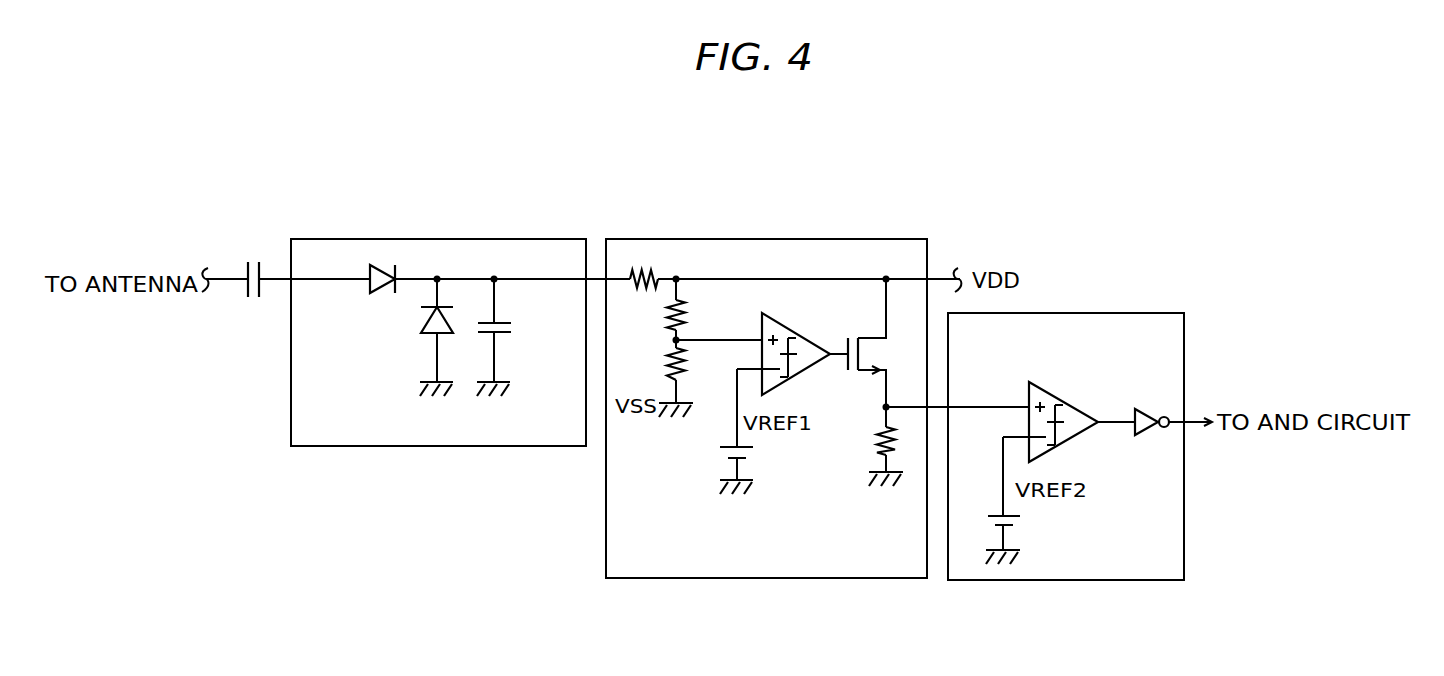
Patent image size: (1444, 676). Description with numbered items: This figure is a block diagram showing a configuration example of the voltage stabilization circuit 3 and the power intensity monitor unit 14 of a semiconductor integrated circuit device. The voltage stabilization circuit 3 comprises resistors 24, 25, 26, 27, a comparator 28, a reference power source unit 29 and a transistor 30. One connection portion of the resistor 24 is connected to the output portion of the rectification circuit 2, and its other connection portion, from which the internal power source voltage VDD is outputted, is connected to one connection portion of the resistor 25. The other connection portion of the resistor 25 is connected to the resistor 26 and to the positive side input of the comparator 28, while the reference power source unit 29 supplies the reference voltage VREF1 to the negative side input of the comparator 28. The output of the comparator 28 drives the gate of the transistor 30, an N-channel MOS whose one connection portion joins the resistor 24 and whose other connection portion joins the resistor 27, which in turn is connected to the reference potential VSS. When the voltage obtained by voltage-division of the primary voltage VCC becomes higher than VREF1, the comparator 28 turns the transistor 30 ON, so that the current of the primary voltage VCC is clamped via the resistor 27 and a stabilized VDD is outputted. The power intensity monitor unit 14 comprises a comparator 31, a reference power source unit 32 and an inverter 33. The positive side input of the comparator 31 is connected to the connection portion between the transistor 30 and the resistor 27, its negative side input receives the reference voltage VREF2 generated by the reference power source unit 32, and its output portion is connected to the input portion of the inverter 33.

The rectification circuit 2 is at (563, 239).
The voltage stabilization circuit 3 is at (905, 239).
The power intensity monitor unit 14 is at (1162, 313).
The resistor 24 is at (656, 270).
The resistor 25 is at (680, 300).
The resistor 26 is at (682, 356).
The resistor 27 is at (877, 425).
The comparator 28 is at (776, 323).
The reference power source unit 29 is at (752, 452).
The transistor 30 is at (862, 338).
The comparator 31 is at (1082, 412).
The reference power source unit 32 is at (1020, 520).
The inverter 33 is at (1145, 440).